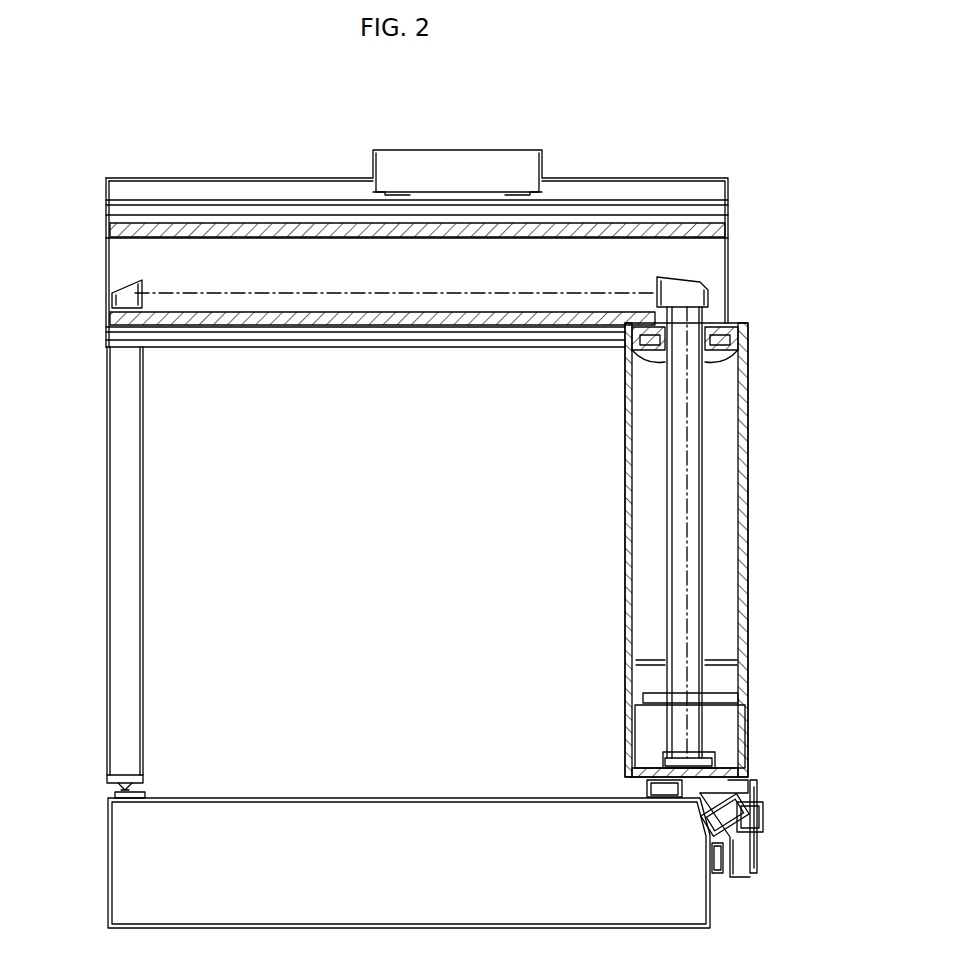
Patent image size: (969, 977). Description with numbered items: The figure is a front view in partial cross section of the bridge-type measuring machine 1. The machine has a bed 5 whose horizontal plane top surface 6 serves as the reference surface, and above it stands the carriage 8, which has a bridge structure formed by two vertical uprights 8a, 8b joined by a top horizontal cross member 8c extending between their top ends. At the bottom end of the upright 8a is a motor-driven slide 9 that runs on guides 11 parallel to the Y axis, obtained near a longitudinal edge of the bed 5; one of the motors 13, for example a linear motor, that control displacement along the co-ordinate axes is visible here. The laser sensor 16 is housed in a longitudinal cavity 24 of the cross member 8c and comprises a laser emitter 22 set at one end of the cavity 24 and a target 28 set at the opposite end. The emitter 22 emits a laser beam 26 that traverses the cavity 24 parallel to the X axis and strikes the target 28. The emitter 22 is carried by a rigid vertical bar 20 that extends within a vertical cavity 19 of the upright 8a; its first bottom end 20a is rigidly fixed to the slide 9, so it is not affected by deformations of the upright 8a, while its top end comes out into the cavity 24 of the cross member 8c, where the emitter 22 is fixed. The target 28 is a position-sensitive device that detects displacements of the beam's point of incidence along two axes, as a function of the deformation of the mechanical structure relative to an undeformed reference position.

The measuring machine 1 is at (148, 166).
The bed 5 is at (135, 872).
The horizontal plane top surface 6 is at (302, 796).
The carriage 8 is at (733, 196).
The vertical upright 8a is at (757, 489).
The vertical upright 8b is at (152, 558).
The top horizontal cross member 8c is at (612, 197).
The motor-driven slide 9 is at (745, 805).
The guides 11 is at (652, 778).
The motor 13 is at (748, 815).
The laser sensor 16 is at (632, 270).
The vertical cavity 19 is at (727, 556).
The vertical bar 20 is at (700, 478).
The first bottom end 20a is at (702, 760).
The laser emitter 22 is at (690, 298).
The longitudinal cavity 24 is at (252, 240).
The laser beam 26 is at (330, 294).
The target 28 is at (130, 300).